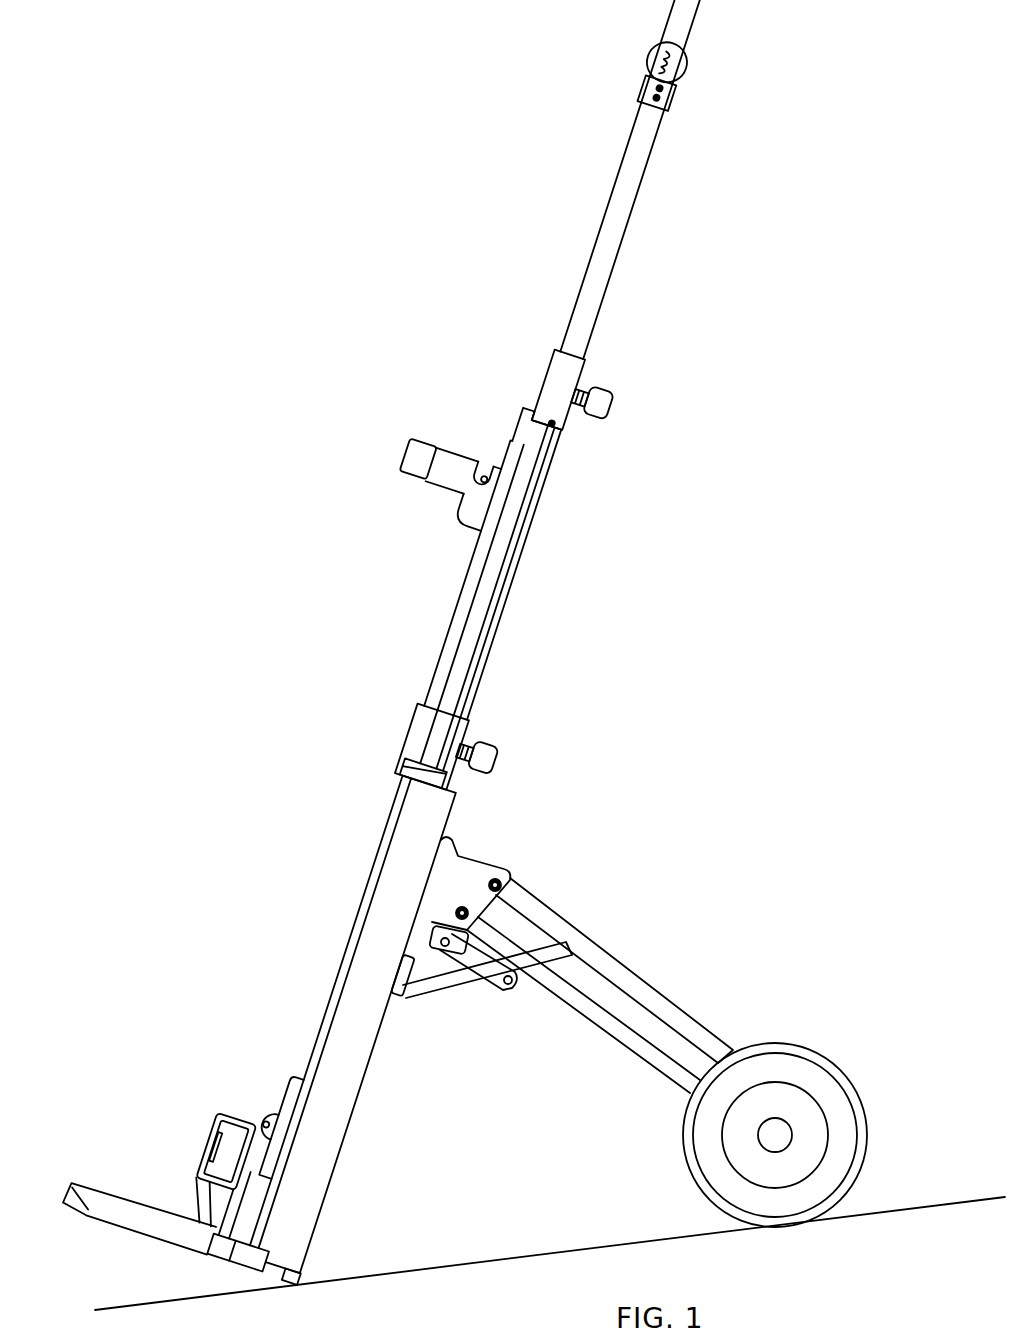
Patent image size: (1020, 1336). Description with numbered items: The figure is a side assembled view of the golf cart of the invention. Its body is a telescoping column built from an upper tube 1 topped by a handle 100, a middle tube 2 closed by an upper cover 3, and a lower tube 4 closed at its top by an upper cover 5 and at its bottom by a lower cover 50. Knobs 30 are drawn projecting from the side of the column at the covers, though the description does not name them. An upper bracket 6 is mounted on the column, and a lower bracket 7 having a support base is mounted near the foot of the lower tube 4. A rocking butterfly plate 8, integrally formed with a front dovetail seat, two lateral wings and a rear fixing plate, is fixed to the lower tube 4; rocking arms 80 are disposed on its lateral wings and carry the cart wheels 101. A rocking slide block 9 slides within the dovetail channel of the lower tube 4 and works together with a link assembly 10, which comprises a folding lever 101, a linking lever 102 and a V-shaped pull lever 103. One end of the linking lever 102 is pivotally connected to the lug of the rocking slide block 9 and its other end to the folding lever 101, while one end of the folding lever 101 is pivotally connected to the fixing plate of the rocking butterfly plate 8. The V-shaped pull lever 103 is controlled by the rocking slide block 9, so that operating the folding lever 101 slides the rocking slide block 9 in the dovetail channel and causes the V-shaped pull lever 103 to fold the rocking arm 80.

The upper tube 1 is at (632, 201).
The handle 100 is at (686, 25).
The upper cover 3 is at (552, 362).
The locking knob 30 is at (598, 400).
The middle tube 2 is at (530, 521).
The upper bracket 6 is at (440, 462).
The upper cover 5 is at (470, 721).
The lower tube 4 is at (380, 839).
The lower cover 50 is at (302, 1276).
The lower bracket 7 is at (172, 1198).
The link assembly 10 is at (633, 1025).
The rocking butterfly plate 8 is at (456, 851).
The rocking slide block 9 is at (393, 1022).
The rocking arm 80 is at (582, 943).
The cart wheels / folding lever 101 is at (812, 1053).
The linking lever 102 is at (486, 1004).
The V-shaped pull lever 103 is at (462, 1048).